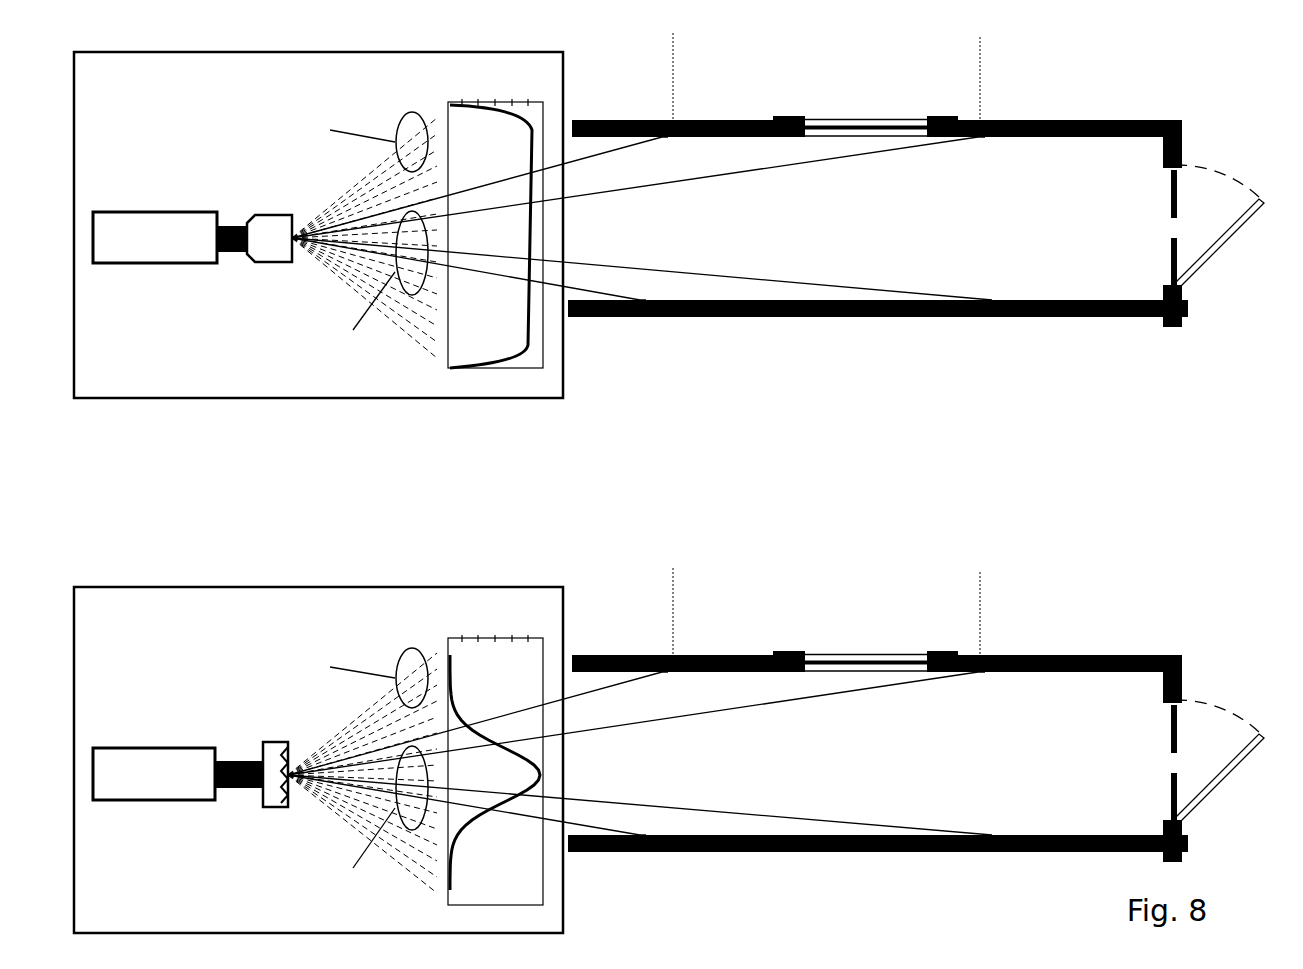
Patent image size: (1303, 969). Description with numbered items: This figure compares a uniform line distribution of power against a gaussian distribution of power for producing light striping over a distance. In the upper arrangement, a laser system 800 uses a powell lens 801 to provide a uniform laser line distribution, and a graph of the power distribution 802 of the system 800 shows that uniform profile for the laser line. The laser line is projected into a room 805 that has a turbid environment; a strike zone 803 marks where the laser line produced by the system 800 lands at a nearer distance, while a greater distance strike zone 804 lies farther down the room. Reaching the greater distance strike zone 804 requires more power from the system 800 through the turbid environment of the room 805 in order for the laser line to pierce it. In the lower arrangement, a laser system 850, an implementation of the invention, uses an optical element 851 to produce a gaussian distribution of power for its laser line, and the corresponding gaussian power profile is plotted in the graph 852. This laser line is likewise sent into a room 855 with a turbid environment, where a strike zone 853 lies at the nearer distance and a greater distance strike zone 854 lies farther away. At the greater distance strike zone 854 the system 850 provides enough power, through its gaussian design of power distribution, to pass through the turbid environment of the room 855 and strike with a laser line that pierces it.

The laser system 800 is at (318, 211).
The powell lens 801 is at (258, 215).
The graph of the power distribution 802 is at (495, 218).
The strike zone 803 is at (488, 187).
The greater distance strike zone 804 is at (644, 187).
The room 805 is at (778, 171).
The laser system 850 is at (318, 747).
The Gaussian beam shaping lens 851 is at (258, 752).
The Gaussian power distribution graph 852 is at (495, 754).
The strike zone 853 is at (486, 723).
The greater distance strike zone 854 is at (642, 723).
The room 855 is at (776, 706).